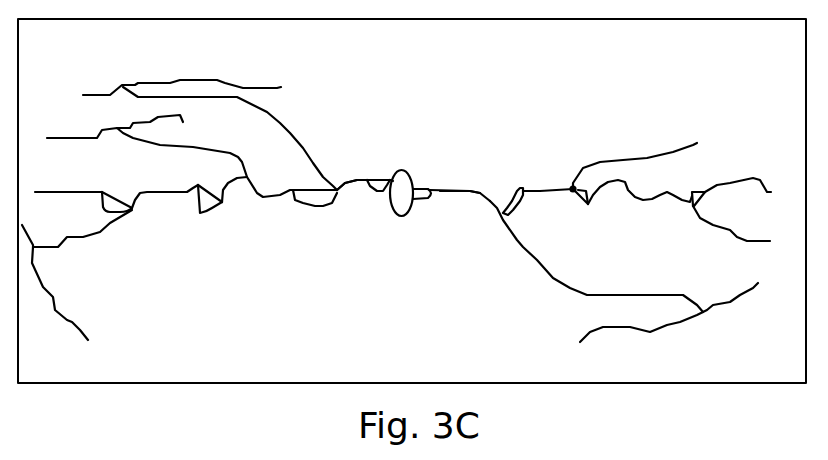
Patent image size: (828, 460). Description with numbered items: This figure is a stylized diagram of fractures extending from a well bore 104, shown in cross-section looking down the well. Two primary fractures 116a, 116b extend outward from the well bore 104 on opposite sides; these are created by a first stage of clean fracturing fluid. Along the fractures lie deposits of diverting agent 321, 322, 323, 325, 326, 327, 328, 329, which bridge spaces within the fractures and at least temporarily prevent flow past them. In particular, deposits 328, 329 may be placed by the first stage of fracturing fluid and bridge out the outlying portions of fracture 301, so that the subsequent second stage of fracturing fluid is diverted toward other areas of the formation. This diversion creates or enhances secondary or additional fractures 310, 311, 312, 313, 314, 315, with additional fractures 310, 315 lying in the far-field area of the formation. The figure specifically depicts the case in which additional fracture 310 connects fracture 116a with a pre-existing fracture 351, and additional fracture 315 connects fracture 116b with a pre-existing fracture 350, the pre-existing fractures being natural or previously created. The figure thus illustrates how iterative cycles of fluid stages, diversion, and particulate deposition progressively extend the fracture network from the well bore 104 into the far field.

The fracture 301 is at (65, 188).
The additional fracture 310 is at (97, 233).
The additional fracture 311 is at (180, 140).
The additional fracture 312 is at (266, 112).
The additional fracture 313 is at (528, 257).
The additional fracture 314 is at (647, 158).
The additional fracture 315 is at (737, 240).
The deposit of diverting agent 321 is at (382, 178).
The deposit of diverting agent 322 is at (202, 213).
The deposit of diverting agent 323 is at (317, 207).
The deposit of diverting agent 325 is at (422, 187).
The deposit of diverting agent 326 is at (522, 185).
The deposit of diverting agent 327 is at (580, 205).
The deposit of diverting agent 328 is at (692, 190).
The deposit of diverting agent 329 is at (103, 207).
The well bore 104 is at (400, 218).
The fracture 116a is at (348, 180).
The fracture 116b is at (463, 189).
The pre-existing fracture 350 is at (628, 328).
The pre-existing fracture 351 is at (72, 323).